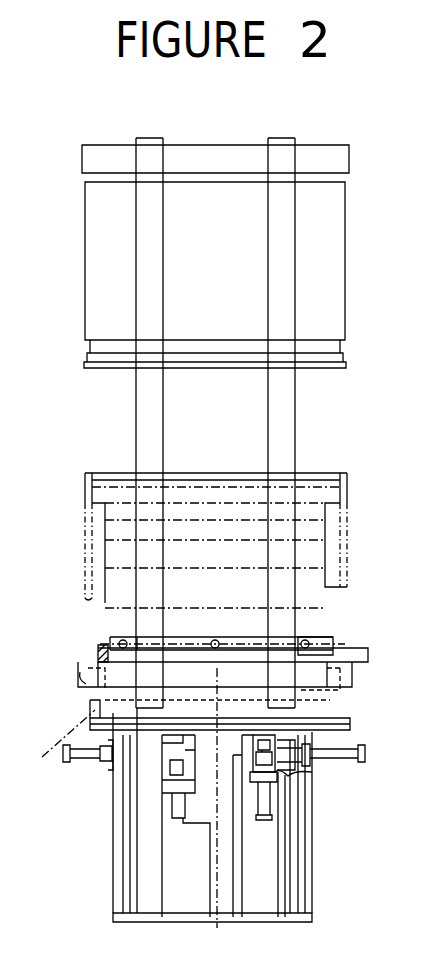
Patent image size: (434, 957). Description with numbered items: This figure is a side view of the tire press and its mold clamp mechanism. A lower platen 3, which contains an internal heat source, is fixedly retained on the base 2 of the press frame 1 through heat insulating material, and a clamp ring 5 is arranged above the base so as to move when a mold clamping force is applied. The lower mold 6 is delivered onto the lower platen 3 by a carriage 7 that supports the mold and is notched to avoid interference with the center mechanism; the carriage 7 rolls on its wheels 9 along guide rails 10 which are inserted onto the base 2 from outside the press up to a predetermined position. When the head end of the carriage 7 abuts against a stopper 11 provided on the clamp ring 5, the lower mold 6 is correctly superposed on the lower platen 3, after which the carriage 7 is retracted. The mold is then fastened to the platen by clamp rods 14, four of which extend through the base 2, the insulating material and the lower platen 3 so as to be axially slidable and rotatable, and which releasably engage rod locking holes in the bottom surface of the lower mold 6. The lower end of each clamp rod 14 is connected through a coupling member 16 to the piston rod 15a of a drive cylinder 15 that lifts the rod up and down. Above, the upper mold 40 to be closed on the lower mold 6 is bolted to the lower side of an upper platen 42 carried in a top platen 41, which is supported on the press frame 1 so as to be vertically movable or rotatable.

The press frame 1 is at (148, 421).
The base 2 is at (205, 732).
The lower platen 3 is at (82, 678).
The clamp ring 5 is at (90, 712).
The lower mold 6 is at (110, 626).
The carriage 7 is at (330, 645).
The wheels 9 is at (310, 634).
The guide rails 10 is at (347, 662).
The stopper 11 is at (95, 652).
The clamp rods 14 is at (298, 738).
The drive cylinder 15 is at (263, 795).
The piston rod 15a is at (275, 770).
The coupling member 16 is at (260, 762).
The upper mold 40 is at (312, 590).
The top platen 41 is at (325, 478).
The upper platen 42 is at (316, 557).